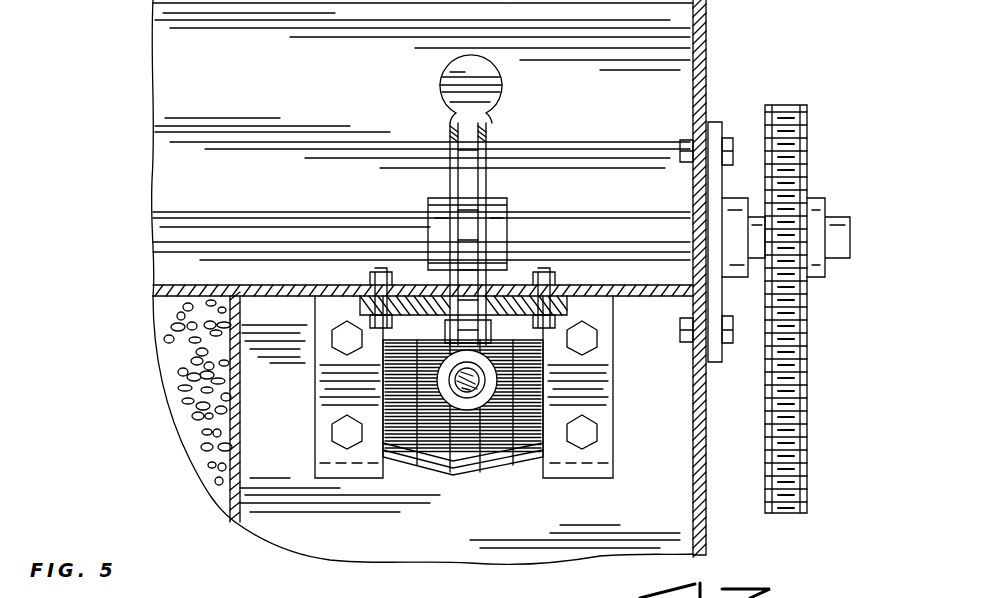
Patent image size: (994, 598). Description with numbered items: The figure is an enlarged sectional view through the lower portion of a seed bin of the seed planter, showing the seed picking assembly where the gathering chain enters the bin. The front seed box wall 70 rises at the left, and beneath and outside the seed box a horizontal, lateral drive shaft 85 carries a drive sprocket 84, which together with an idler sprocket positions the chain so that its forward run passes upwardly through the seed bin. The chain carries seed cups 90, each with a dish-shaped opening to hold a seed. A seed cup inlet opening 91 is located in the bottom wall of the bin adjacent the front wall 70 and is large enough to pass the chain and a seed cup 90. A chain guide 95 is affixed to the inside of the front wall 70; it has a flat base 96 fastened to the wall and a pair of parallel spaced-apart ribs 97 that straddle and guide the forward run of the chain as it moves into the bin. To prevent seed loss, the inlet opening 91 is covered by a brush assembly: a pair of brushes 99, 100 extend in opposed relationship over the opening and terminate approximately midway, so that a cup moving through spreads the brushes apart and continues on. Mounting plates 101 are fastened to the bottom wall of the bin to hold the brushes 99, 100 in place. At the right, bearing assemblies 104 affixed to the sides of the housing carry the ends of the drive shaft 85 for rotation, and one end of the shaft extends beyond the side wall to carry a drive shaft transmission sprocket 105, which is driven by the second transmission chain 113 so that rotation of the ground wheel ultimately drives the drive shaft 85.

The front seed box wall 70 is at (175, 287).
The drive sprocket 84 is at (478, 172).
The drive shaft 85 is at (197, 228).
The seed cup 90 is at (503, 90).
The seed cup inlet opening 91 is at (522, 472).
The chain guide 95 is at (348, 303).
The flat base 96 is at (565, 300).
The ribs 97 is at (500, 300).
The brush 99 is at (490, 465).
The brush 100 is at (425, 458).
The mounting plates 101 is at (325, 397).
The bearing assemblies 104 is at (735, 198).
The drive shaft transmission sprocket 105 is at (788, 184).
The second transmission chain 113 is at (803, 458).